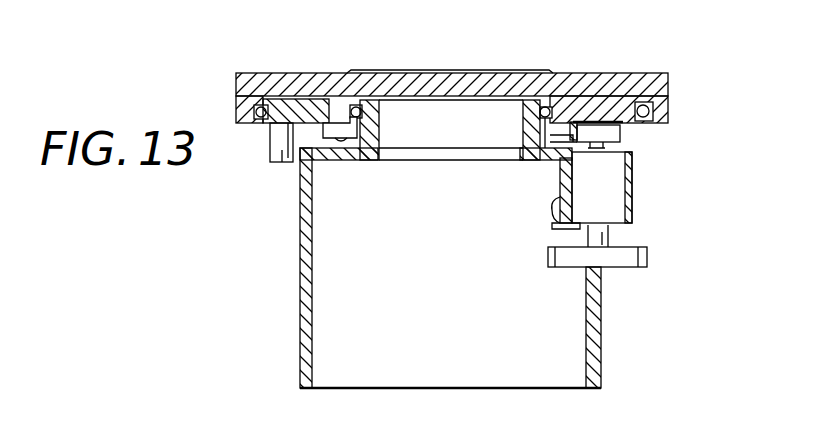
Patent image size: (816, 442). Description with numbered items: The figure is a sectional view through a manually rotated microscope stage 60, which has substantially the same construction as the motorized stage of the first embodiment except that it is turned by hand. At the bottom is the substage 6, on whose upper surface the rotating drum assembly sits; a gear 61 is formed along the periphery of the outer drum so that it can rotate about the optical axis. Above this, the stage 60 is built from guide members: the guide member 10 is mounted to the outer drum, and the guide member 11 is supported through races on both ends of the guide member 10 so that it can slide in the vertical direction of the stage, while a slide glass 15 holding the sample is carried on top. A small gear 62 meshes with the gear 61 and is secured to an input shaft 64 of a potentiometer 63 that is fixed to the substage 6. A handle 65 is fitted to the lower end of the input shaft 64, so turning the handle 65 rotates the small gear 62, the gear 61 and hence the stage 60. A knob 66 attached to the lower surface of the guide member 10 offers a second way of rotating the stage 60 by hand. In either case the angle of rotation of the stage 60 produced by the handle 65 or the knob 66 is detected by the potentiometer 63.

The substage 6 is at (603, 356).
The guide member 10 is at (632, 73).
The guide member 11 is at (322, 133).
The slide glass 15 is at (470, 72).
The stage 60 is at (569, 63).
The gear 61 is at (318, 73).
The small gear 62 is at (598, 128).
The potentiometer 63 is at (607, 171).
The input shaft 64 is at (612, 238).
The handle 65 is at (632, 270).
The knob 66 is at (277, 163).